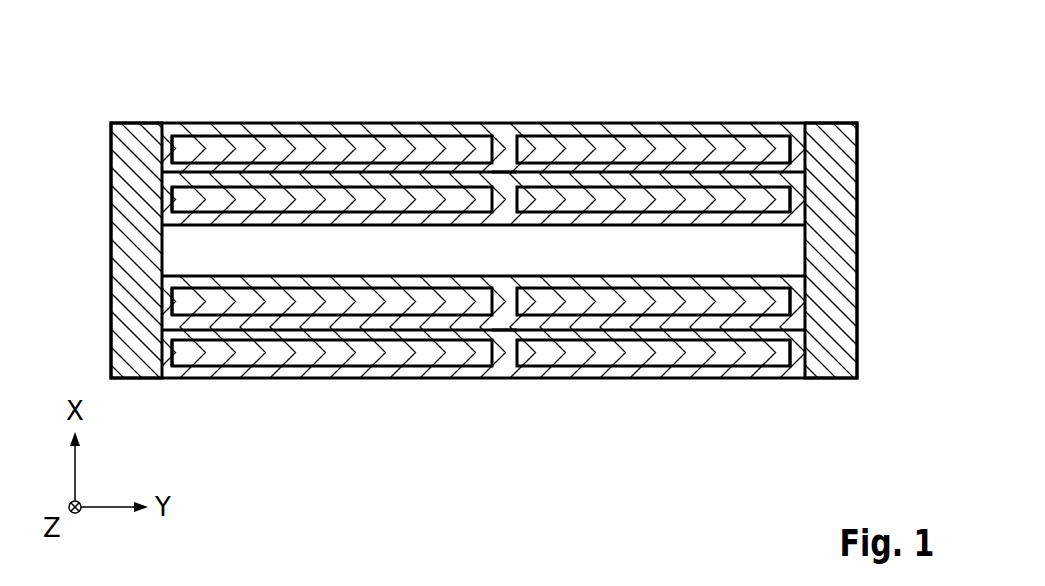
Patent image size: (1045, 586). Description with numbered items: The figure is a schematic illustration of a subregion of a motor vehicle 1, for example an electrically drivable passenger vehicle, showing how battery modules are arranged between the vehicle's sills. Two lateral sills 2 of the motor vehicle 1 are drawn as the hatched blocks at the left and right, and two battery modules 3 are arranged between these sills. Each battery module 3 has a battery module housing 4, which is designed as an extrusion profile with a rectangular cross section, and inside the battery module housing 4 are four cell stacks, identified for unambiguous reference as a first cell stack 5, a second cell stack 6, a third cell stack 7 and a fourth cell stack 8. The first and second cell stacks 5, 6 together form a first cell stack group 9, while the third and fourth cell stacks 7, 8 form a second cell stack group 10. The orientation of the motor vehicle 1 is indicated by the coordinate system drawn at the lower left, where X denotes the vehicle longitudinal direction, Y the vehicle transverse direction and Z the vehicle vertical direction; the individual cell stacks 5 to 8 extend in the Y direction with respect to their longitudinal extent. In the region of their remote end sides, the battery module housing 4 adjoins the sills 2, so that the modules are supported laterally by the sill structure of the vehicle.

The motor vehicle 1 is at (862, 72).
The lateral sills 2 is at (120, 236).
The battery module 3 is at (760, 112).
The battery module housing 4 is at (495, 200).
The first cell stack 5 is at (355, 150).
The second cell stack 6 is at (400, 195).
The third cell stack 7 is at (620, 150).
The fourth cell stack 8 is at (545, 195).
The first cell stack group 9 is at (208, 195).
The second cell stack group 10 is at (775, 149).